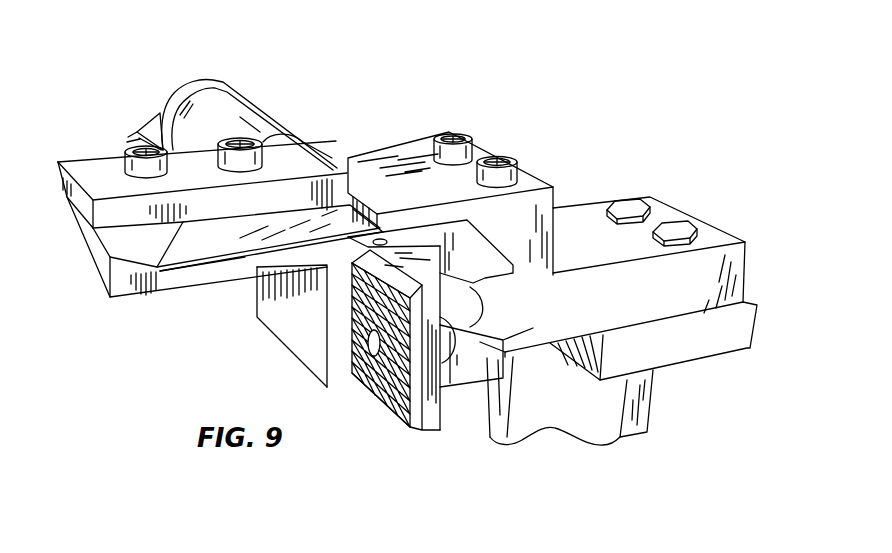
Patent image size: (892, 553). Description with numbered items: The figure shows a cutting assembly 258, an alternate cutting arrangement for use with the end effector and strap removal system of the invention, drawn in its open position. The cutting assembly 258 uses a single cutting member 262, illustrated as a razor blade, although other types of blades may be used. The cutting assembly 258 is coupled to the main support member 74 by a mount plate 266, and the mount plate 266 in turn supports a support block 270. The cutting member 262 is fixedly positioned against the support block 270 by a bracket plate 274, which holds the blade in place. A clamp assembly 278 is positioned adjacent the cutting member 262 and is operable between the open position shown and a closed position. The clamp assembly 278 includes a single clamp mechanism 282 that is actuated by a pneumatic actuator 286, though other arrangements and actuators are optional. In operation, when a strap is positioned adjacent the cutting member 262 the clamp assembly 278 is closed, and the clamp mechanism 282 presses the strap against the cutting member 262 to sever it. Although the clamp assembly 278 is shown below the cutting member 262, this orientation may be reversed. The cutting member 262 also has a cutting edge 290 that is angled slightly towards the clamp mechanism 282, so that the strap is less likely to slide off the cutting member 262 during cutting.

The cutting assembly 258 is at (612, 108).
The bracket plate 274 is at (100, 187).
The support block 270 is at (187, 280).
The cutting member 262 is at (300, 228).
The cutting edge 290 is at (245, 257).
The pneumatic actuator 286 is at (242, 110).
The clamp assembly 278 is at (420, 447).
The clamp mechanism 282 is at (350, 376).
The mount plate 266 is at (700, 338).
The main support member 74 is at (600, 412).